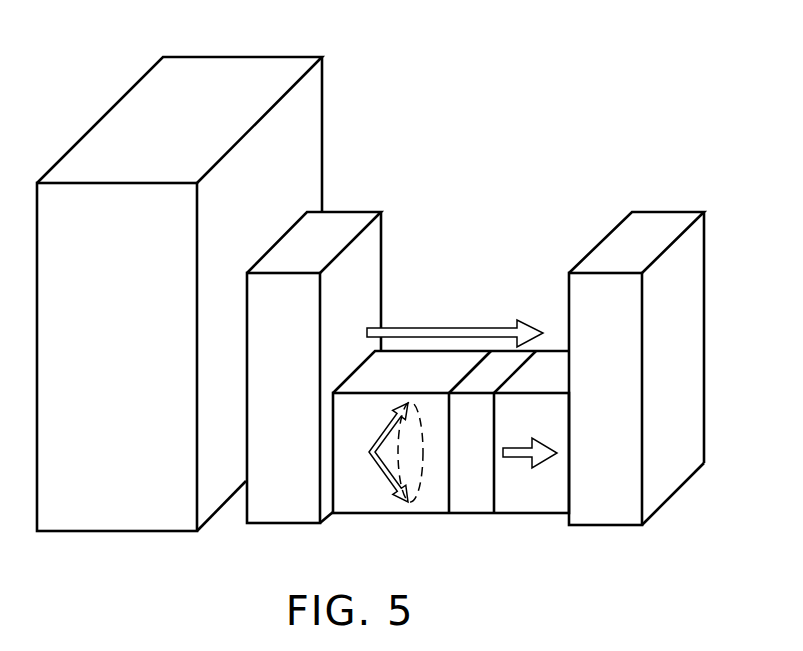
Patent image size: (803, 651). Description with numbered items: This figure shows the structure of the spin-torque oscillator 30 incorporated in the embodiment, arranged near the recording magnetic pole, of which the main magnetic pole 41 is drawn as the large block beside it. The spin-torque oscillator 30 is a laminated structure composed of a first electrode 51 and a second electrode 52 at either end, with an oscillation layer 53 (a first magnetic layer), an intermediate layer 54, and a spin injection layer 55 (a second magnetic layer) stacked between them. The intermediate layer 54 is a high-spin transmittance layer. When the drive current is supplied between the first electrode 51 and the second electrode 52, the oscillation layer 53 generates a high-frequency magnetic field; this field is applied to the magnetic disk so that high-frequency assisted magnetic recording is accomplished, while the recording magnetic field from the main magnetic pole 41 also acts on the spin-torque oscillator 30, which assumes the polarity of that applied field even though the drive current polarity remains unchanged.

The spin-torque oscillator 30 is at (483, 283).
The main magnetic pole 41 is at (241, 67).
The first electrode 51 is at (348, 218).
The second electrode 52 is at (655, 218).
The oscillation layer 53 is at (360, 505).
The intermediate layer 54 is at (469, 505).
The spin injection layer 55 is at (535, 505).